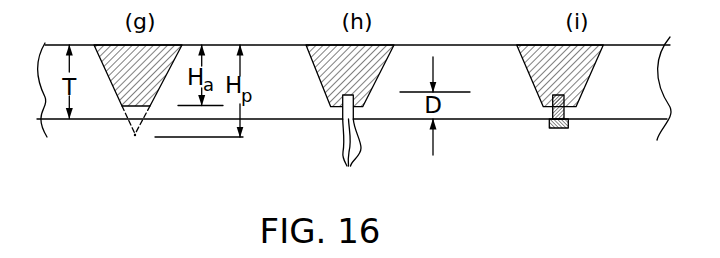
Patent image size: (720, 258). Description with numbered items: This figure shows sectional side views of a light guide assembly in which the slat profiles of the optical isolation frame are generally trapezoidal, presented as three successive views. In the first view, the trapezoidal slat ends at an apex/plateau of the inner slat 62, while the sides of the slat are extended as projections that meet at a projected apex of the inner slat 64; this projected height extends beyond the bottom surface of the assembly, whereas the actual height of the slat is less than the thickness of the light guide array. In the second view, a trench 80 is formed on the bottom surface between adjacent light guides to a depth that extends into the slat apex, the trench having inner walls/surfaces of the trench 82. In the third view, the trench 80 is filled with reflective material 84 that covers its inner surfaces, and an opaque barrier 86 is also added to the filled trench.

The apex/plateau of inner slat 62 is at (130, 118).
The projected apex of inner slat 64 is at (137, 138).
The trench 80 is at (338, 128).
The inner walls/surfaces of trench 82 is at (348, 166).
The reflective material 84 is at (565, 107).
The opaque barrier 86 is at (558, 129).